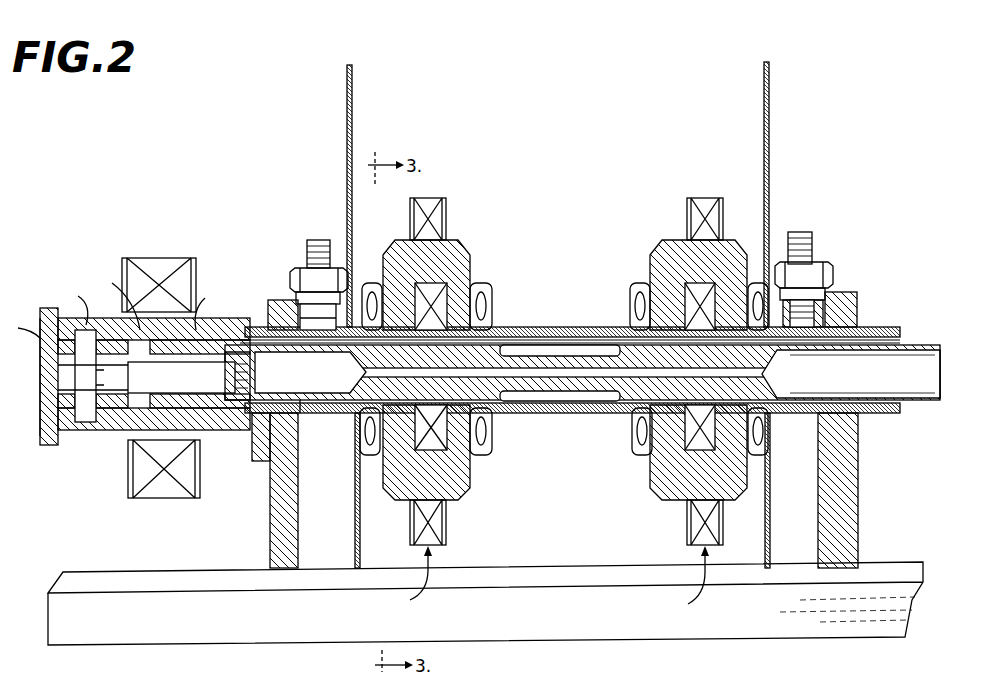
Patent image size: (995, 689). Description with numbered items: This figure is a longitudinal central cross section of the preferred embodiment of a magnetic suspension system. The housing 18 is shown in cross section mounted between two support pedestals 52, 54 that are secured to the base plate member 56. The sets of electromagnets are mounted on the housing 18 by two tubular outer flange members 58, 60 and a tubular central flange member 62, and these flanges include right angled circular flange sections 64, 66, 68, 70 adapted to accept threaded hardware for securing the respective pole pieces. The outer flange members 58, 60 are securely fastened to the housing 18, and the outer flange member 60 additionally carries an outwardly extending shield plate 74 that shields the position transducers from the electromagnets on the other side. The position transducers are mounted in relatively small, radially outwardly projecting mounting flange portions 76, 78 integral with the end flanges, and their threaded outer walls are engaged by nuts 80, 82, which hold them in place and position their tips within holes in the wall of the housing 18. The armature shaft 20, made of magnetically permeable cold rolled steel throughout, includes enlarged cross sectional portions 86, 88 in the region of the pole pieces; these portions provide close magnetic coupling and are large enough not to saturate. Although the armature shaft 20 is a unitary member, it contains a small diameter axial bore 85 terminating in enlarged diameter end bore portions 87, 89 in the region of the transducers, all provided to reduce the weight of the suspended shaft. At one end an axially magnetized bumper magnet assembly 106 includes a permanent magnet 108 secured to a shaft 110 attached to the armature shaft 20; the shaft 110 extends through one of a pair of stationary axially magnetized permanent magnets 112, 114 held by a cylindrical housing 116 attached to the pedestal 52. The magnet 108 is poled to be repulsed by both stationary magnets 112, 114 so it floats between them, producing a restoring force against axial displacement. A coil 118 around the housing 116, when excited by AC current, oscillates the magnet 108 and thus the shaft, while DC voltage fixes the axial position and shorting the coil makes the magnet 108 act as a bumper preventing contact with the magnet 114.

The housing 18 is at (868, 327).
The armature shaft 20 is at (585, 352).
The support pedestal 52 is at (272, 517).
The support pedestal 54 is at (860, 474).
The base plate member 56 is at (567, 572).
The outer flange member 58 is at (340, 97).
The outer flange member 60 is at (809, 124).
The central flange member 62 is at (568, 327).
The circular flange section 64 is at (375, 283).
The circular flange section 66 is at (752, 283).
The circular flange section 68 is at (482, 283).
The circular flange section 70 is at (640, 283).
The shield plate 74 is at (770, 80).
The mounting flange portion 76 is at (300, 300).
The mounting flange portion 78 is at (822, 290).
The nut 80 is at (305, 268).
The nut 82 is at (830, 264).
The axial bore 85 is at (506, 330).
The enlarged cross sectional portion 86 is at (507, 413).
The end bore portion 87 is at (303, 413).
The enlarged cross sectional portion 88 is at (608, 401).
The end bore portion 89 is at (938, 358).
The bumper magnet assembly 106 is at (139, 355).
The permanent magnet 108 is at (118, 440).
The shaft 110 is at (222, 355).
The stationary permanent magnet 112 is at (185, 412).
The stationary permanent magnet 114 is at (52, 418).
The cylindrical housing 116 is at (110, 425).
The coil 118 is at (165, 262).